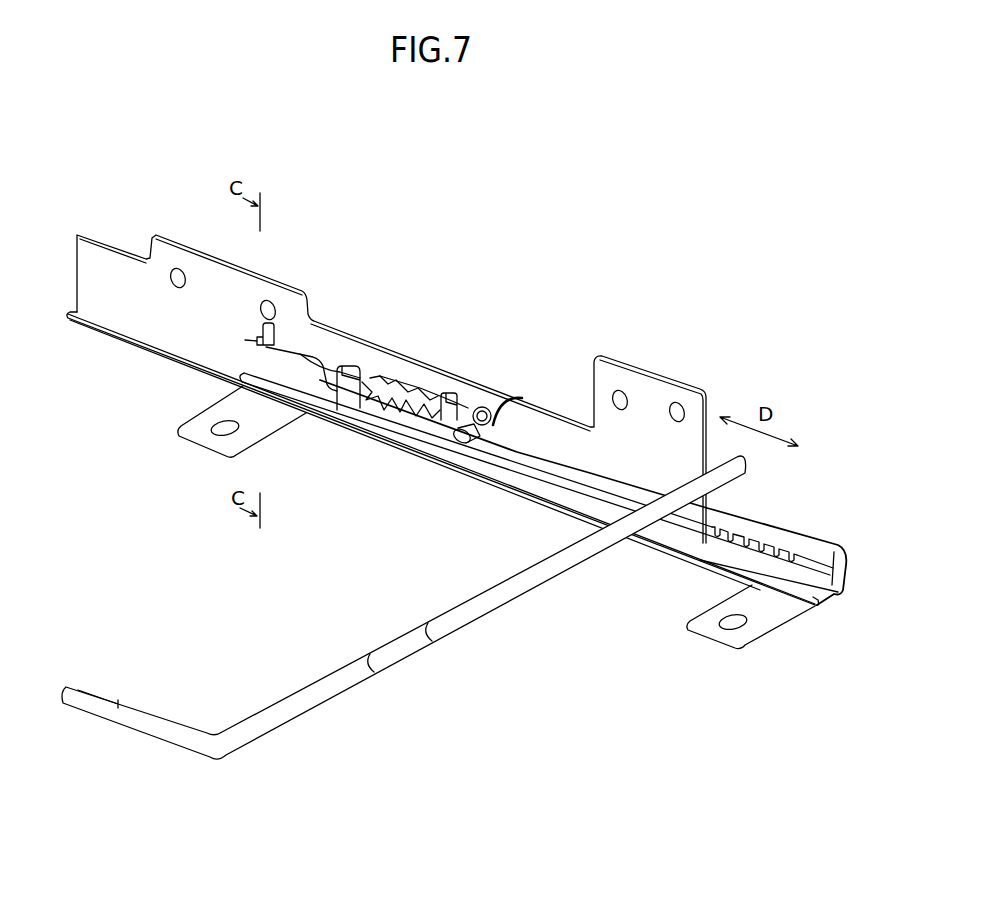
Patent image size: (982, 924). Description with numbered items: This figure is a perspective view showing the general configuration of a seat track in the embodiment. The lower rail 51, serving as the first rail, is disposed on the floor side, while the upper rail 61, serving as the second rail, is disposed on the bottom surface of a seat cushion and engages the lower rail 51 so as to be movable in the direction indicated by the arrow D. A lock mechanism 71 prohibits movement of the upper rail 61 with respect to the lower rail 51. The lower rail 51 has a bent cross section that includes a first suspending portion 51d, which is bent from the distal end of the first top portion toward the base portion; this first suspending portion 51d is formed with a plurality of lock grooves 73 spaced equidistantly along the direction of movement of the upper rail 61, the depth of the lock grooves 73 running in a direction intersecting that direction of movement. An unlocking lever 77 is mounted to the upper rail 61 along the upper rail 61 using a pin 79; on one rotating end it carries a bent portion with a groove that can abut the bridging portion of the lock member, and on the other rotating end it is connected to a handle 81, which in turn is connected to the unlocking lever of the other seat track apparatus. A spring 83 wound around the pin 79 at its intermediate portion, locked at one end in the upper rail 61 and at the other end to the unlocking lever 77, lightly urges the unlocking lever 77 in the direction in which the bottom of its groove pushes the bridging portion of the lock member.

The lower rail 51 is at (653, 540).
The first suspending portion 51d is at (550, 474).
The upper rail 61 is at (660, 388).
The lock mechanism 71 is at (389, 418).
The lock grooves 73 is at (767, 543).
The unlocking lever 77 is at (410, 413).
The pin 79 is at (462, 444).
The handle 81 is at (510, 587).
The spring 83 is at (500, 397).